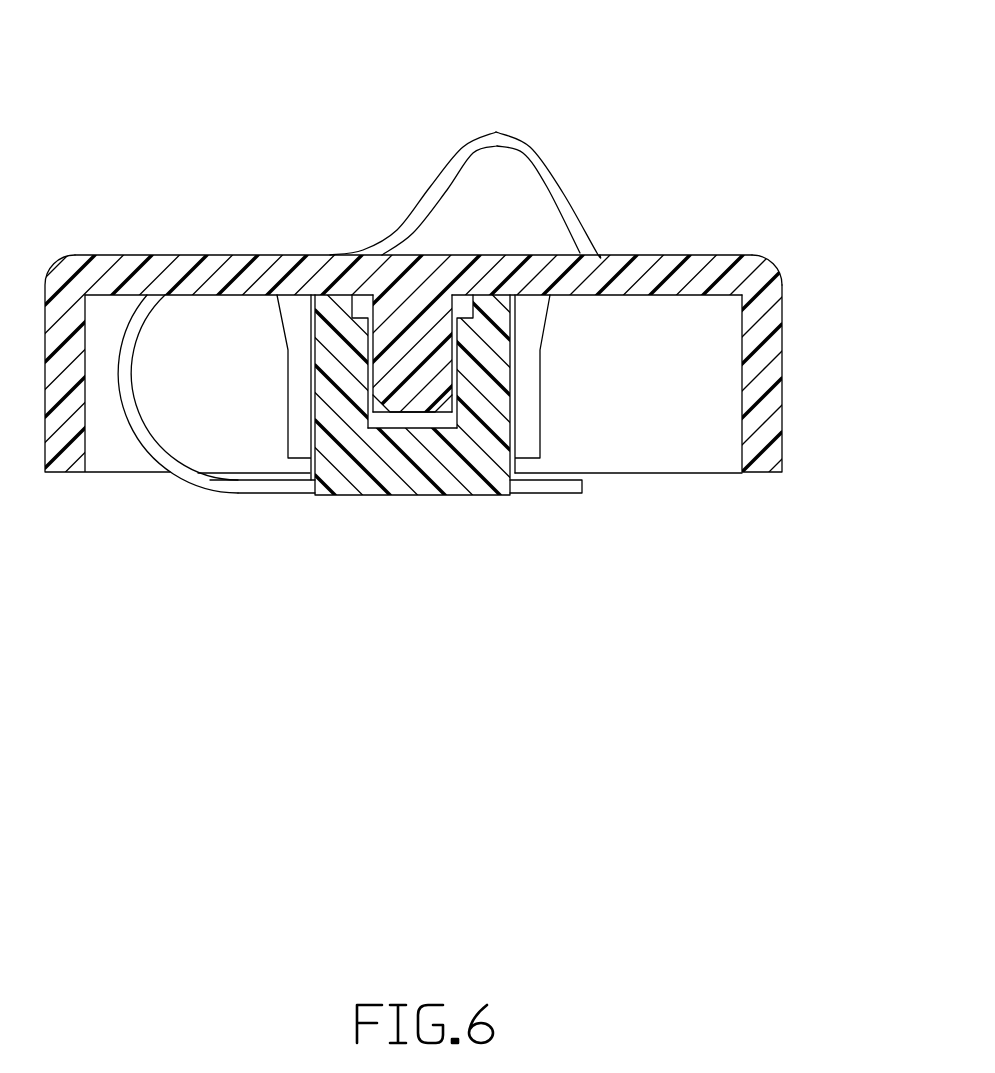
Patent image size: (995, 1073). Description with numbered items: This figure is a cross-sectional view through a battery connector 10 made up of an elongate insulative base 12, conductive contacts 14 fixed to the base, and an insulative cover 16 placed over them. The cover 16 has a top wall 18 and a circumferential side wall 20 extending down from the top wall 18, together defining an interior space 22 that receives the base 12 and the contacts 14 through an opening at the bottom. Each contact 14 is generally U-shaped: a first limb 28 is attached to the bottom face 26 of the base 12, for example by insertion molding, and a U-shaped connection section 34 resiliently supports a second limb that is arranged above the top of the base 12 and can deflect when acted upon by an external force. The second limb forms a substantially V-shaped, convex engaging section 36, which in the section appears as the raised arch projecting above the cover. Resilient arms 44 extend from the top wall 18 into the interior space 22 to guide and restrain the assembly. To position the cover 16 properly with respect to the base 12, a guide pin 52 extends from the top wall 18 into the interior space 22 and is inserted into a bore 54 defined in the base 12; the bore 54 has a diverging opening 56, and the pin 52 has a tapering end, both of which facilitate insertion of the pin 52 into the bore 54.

The battery connector 10 is at (122, 122).
The insulative base 12 is at (347, 448).
The conductive contacts 14 is at (505, 130).
The insulative cover 16 is at (744, 256).
The top wall 18 is at (658, 266).
The side wall 20 is at (760, 368).
The interior space 22 is at (688, 430).
The bottom face 26 is at (497, 487).
The first limb 28 is at (254, 488).
The U-shaped connection section 34 is at (137, 408).
The engaging section 36 is at (555, 178).
The resilient arms 44 is at (527, 366).
The guide pin 52 is at (403, 373).
The bore 54 is at (428, 422).
The diverging opening 56 is at (358, 307).